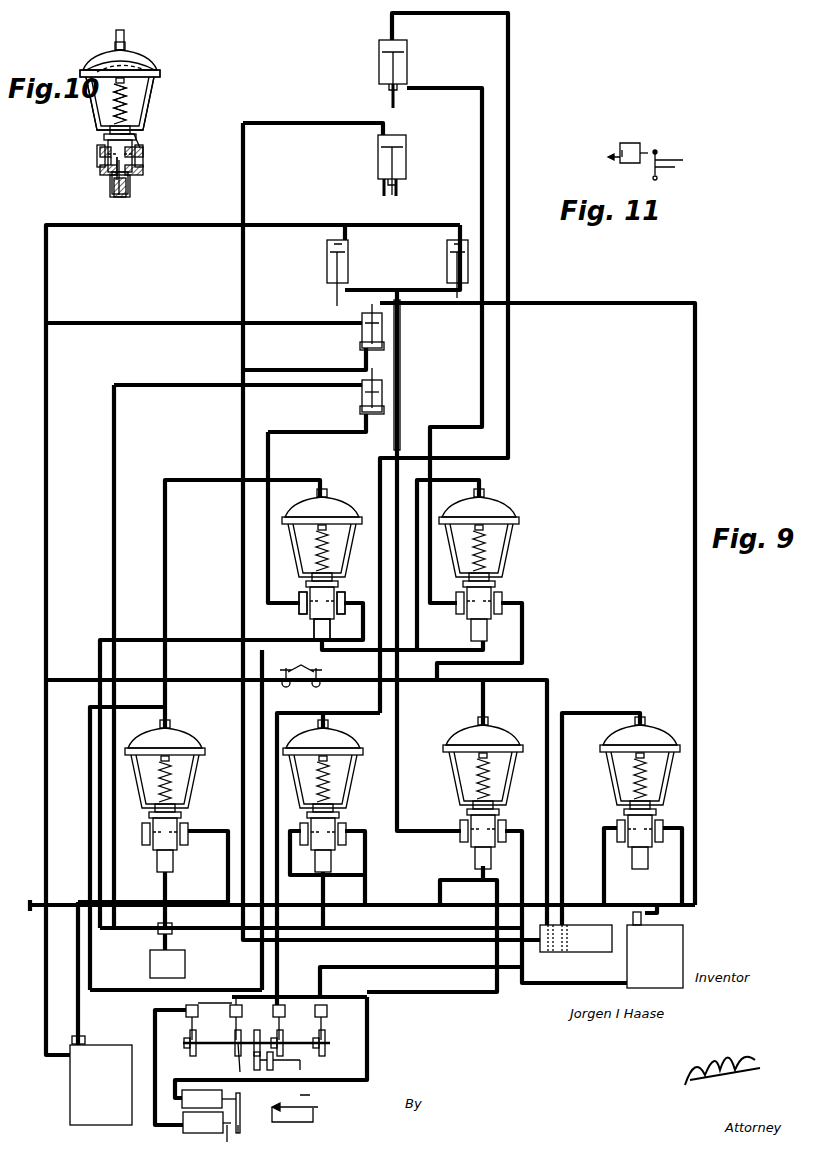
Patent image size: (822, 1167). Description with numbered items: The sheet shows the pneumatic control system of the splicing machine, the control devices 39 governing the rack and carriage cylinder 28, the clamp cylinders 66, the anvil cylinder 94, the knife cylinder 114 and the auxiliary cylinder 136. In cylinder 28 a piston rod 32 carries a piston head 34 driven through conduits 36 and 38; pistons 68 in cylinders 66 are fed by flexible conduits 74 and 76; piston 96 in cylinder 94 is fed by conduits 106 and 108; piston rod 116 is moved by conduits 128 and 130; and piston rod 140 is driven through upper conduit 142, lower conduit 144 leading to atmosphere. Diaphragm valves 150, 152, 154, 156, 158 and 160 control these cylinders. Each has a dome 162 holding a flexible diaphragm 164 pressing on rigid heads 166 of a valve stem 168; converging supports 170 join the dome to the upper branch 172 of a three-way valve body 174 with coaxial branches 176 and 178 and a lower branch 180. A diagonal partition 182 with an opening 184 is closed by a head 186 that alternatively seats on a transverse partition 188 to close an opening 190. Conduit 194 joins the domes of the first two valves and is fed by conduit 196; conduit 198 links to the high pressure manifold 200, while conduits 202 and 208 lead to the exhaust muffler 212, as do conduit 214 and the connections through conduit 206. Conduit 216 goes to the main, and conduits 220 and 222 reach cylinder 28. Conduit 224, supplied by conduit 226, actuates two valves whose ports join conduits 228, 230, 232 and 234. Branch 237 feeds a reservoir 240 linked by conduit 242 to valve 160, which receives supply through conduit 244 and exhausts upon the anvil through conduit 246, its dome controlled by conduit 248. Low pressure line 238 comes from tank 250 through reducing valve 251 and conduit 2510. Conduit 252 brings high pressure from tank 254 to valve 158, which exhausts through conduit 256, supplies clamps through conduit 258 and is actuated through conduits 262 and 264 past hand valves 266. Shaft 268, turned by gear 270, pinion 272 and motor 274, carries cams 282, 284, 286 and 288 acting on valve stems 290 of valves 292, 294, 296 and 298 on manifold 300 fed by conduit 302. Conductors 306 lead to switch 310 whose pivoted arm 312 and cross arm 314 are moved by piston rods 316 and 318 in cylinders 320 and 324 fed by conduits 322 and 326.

In FIG. 9, the cylinder 28 is at (362, 398).
In FIG. 9, the piston rod 32 is at (376, 372).
In FIG. 9, the piston head 34 is at (360, 411).
In FIG. 9, the conduit 36 is at (296, 387).
In FIG. 9, the conduit 38 is at (368, 420).
In FIG. 9, the control devices 39 is at (517, 273).
In FIG. 9, the cylinders 66 is at (341, 254).
In FIG. 9, the pistons 68 is at (327, 254).
In FIG. 9, the flexible conduit 74 is at (383, 226).
In FIG. 9, the flexible conduit 76 is at (403, 288).
In FIG. 9, the cylinder 94 is at (362, 331).
In FIG. 9, the piston 96 is at (362, 347).
In FIG. 9, the upper conduit 106 is at (280, 320).
In FIG. 9, the lower conduit 108 is at (298, 368).
In FIG. 9, the vertical cylinder 114 is at (400, 68).
In FIG. 9, the piston rod 116 is at (398, 100).
In FIG. 9, the upper conduit 128 is at (510, 46).
In FIG. 9, the lower conduit 130 is at (480, 117).
In FIG. 9, the vertical cylinder 136 is at (407, 155).
In FIG. 9, the piston rod 140 is at (399, 185).
In FIG. 9, the upper conduit 142 is at (345, 120).
In FIG. 9, the lower conduit 144 is at (382, 185).
In FIG. 10, the diaphragm valve 150 is at (145, 92).
In FIG. 9, the diaphragm valve 150 is at (305, 505).
In FIG. 9, the diaphragm valve 152 is at (185, 780).
In FIG. 9, the diaphragm valve 154 is at (500, 508).
In FIG. 9, the diaphragm valve 156 is at (332, 740).
In FIG. 9, the diaphragm valve 158 is at (495, 737).
In FIG. 9, the diaphragm valve 160 is at (625, 735).
In FIG. 10, the dome 162 is at (150, 64).
In FIG. 10, the flexible diaphragm 164 is at (140, 55).
In FIG. 10, the rigid heads 166 is at (157, 72).
In FIG. 10, the valve stem 168 is at (128, 108).
In FIG. 10, the downwardly converging supports 170 is at (150, 112).
In FIG. 10, the tubular upper branch 172 is at (138, 140).
In FIG. 10, the three-way valve body 174 is at (108, 170).
In FIG. 10, the tubular branch 176 is at (100, 168).
In FIG. 9, the tubular branch 176 is at (299, 606).
In FIG. 10, the tubular branch 178 is at (143, 152).
In FIG. 9, the tubular branch 178 is at (343, 594).
In FIG. 10, the downwardly extending tubular branch 180 is at (126, 190).
In FIG. 9, the downwardly extending tubular branch 180 is at (313, 628).
In FIG. 10, the partition 182 is at (143, 168).
In FIG. 10, the opening 184 is at (100, 151).
In FIG. 10, the head 186 is at (119, 192).
In FIG. 10, the transversely extending partition 188 is at (130, 181).
In FIG. 10, the opening 190 is at (116, 176).
In FIG. 10, the conduit 194 is at (122, 33).
In FIG. 9, the conduit 194 is at (167, 515).
In FIG. 9, the conduit 196 is at (147, 708).
In FIG. 9, the conduit 198 is at (263, 697).
In FIG. 9, the conduit 200 is at (292, 905).
In FIG. 9, the conduit 202 is at (168, 886).
In FIG. 9, the conduit 206 is at (192, 930).
In FIG. 9, the conduit 208 is at (170, 946).
In FIG. 9, the exhaust muffler 212 is at (185, 963).
In FIG. 9, the conduit 214 is at (176, 640).
In FIG. 9, the conduit 216 is at (196, 830).
In FIG. 9, the conduit 220 is at (118, 596).
In FIG. 9, the conduit 222 is at (270, 450).
In FIG. 9, the interconnecting conduit 224 is at (480, 482).
In FIG. 9, the conduit 226 is at (293, 717).
In FIG. 9, the conduit 228 is at (524, 638).
In FIG. 9, the conduit 230 is at (367, 889).
In FIG. 9, the conduit 232 is at (430, 648).
In FIG. 9, the conduit 234 is at (326, 915).
In FIG. 9, the branch 237 is at (241, 412).
In FIG. 9, the supply line 238 is at (48, 416).
In FIG. 9, the reservoir 240 is at (602, 952).
In FIG. 9, the conduit 242 is at (604, 869).
In FIG. 9, the conduit 244 is at (684, 862).
In FIG. 9, the conduit 246 is at (693, 478).
In FIG. 9, the conduit 248 is at (583, 711).
In FIG. 9, the tank 250 is at (70, 1104).
In FIG. 9, the reducing valve 251 is at (80, 1035).
In FIG. 9, the conduit 2510 is at (76, 968).
In FIG. 9, the conduit 252 is at (524, 866).
In FIG. 9, the tank 254 is at (683, 940).
In FIG. 9, the conduit 256 is at (457, 881).
In FIG. 9, the conduit 258 is at (400, 348).
In FIG. 9, the conduit 262 is at (484, 699).
In FIG. 9, the conduit 264 is at (545, 679).
In FIG. 9, the manually operated valves 266 is at (241, 669).
In FIG. 9, the shaft 268 is at (222, 1046).
In FIG. 9, the gear 270 is at (250, 1036).
In FIG. 9, the pinion 272 is at (251, 1113).
In FIG. 9, the motor 274 is at (273, 1063).
In FIG. 9, the cam 282 is at (190, 1033).
In FIG. 9, the cam 284 is at (239, 1070).
In FIG. 9, the cam 286 is at (283, 1036).
In FIG. 9, the cam 288 is at (327, 1032).
In FIG. 9, the valve stems 290 is at (194, 1022).
In FIG. 9, the valve 292 is at (186, 1008).
In FIG. 9, the valve 294 is at (230, 1008).
In FIG. 9, the valve 296 is at (286, 1008).
In FIG. 9, the valve 298 is at (326, 1008).
In FIG. 9, the manifold 300 is at (275, 990).
In FIG. 9, the conduit 302 is at (102, 988).
In FIG. 9, the conductors 306 is at (305, 1068).
In FIG. 9, the switch 310 is at (301, 1111).
In FIG. 11, the pivoted arm 312 is at (659, 178).
In FIG. 11, the cross arm 314 is at (657, 153).
In FIG. 9, the cross arm 314 is at (241, 1130).
In FIG. 11, the piston rod 316 is at (648, 150).
In FIG. 9, the piston rod 316 is at (237, 1089).
In FIG. 9, the piston rod 318 is at (240, 1138).
In FIG. 11, the cylinder 320 is at (625, 143).
In FIG. 9, the cylinder 320 is at (196, 1094).
In FIG. 9, the conduit 322 is at (370, 1066).
In FIG. 9, the cylinder 324 is at (192, 1130).
In FIG. 9, the conduit 326 is at (155, 1034).